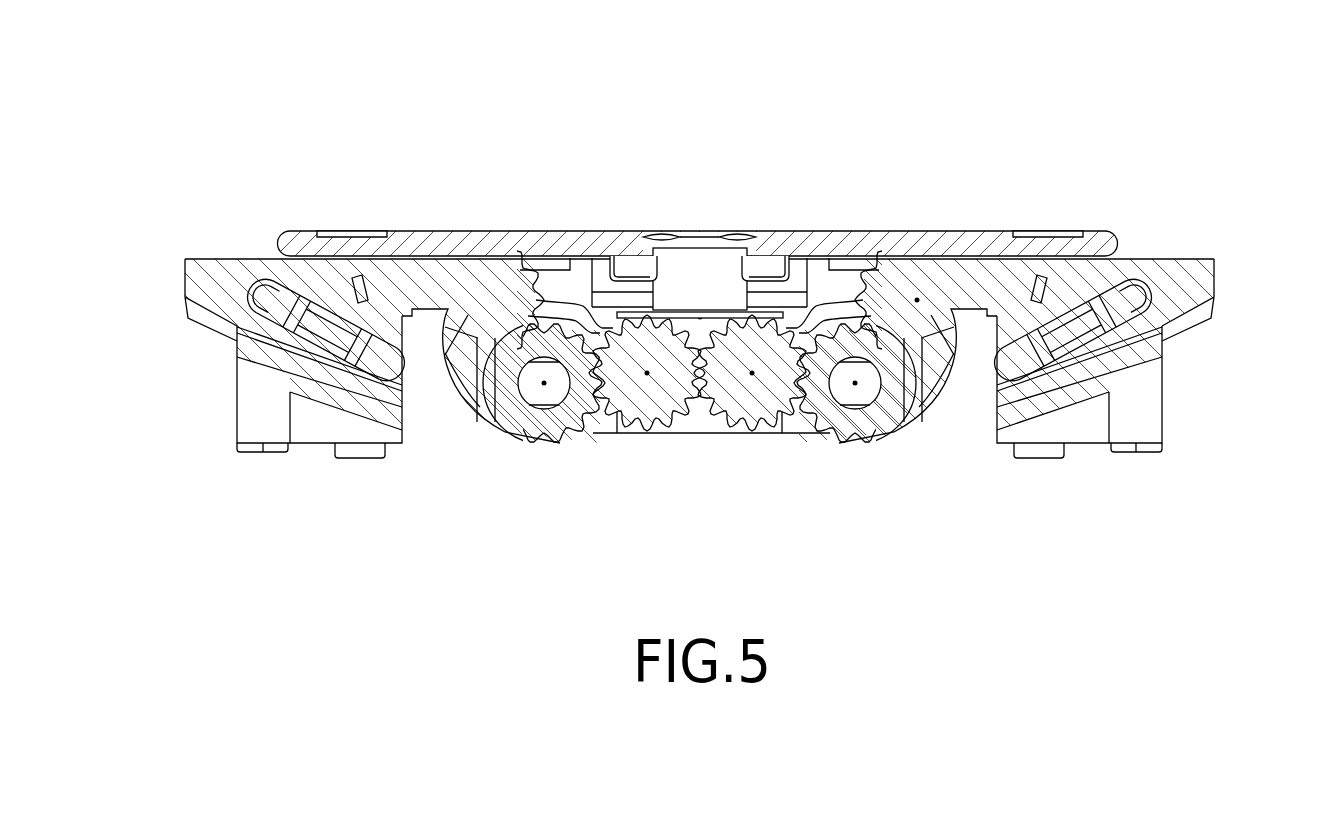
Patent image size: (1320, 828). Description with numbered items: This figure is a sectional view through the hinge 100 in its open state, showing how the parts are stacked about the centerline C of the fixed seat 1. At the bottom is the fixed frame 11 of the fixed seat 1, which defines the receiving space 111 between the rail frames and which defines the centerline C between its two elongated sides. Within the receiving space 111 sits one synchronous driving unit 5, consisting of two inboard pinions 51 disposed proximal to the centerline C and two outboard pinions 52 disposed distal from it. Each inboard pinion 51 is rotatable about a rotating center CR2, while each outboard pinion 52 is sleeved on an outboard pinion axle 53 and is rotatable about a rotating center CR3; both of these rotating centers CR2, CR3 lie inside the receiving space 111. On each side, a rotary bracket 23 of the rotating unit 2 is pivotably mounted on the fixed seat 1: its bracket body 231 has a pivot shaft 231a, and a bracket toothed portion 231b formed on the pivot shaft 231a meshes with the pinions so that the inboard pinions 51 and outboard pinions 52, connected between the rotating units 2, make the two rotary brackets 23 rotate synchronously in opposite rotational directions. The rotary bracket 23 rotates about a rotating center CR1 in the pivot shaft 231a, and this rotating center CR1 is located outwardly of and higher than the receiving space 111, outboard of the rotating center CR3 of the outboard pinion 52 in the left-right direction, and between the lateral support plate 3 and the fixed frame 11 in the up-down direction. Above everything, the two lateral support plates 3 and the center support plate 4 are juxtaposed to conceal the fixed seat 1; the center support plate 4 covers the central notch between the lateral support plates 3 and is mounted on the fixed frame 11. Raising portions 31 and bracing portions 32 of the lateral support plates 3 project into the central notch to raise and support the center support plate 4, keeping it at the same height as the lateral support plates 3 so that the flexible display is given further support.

The hinge 100 is at (215, 85).
The fixed seat 1 is at (678, 441).
The fixed frame 11 is at (472, 405).
The receiving space 111 is at (792, 425).
The rotating unit 2 is at (224, 397).
The rotary bracket 23 is at (699, 264).
The bracket body 231 is at (430, 253).
The pivot shaft 231a is at (917, 300).
The bracket toothed portion 231b is at (533, 327).
The lateral support plate 3 is at (398, 232).
The raising portion 31 is at (565, 295).
The bracing portion 32 is at (632, 265).
The center support plate 4 is at (700, 240).
The synchronous driving unit 5 is at (732, 442).
The inboard pinion 51 is at (675, 393).
The outboard pinion 52 is at (560, 412).
The outboard pinion axle 53 is at (528, 385).
The centerline C is at (700, 284).
The rotating center of the rotary bracket CR1 is at (482, 300).
The rotating center of the inboard pinion CR2 is at (647, 377).
The rotating center of the outboard pinion CR3 is at (545, 386).